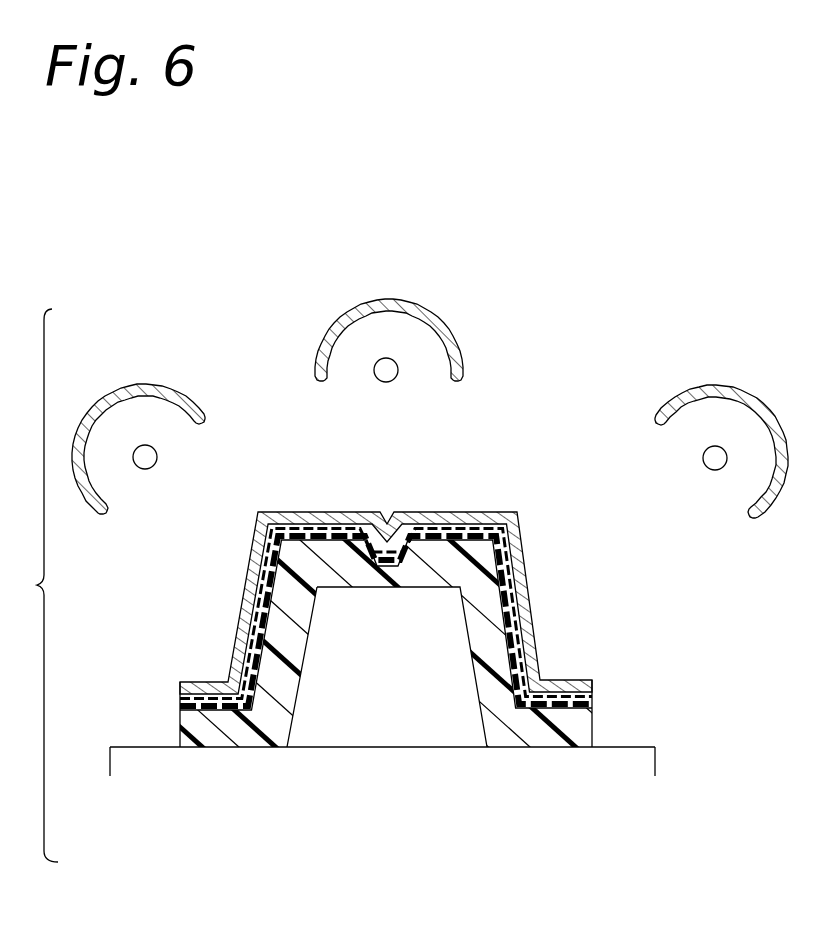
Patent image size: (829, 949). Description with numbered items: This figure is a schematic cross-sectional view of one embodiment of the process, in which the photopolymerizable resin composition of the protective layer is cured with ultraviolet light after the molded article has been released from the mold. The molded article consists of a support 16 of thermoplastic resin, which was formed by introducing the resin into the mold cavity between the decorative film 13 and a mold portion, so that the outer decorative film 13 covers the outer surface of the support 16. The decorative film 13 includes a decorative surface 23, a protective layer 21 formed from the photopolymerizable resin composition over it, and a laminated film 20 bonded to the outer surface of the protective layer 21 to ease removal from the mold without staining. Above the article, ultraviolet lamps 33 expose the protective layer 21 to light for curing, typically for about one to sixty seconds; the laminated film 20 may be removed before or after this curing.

The outer decorative film 13 is at (436, 586).
The support 16 is at (487, 692).
The laminated film 20 is at (517, 533).
The protective layer 21 is at (523, 560).
The decorative surface 23 is at (405, 621).
The ultraviolet lamps 33 is at (138, 388).